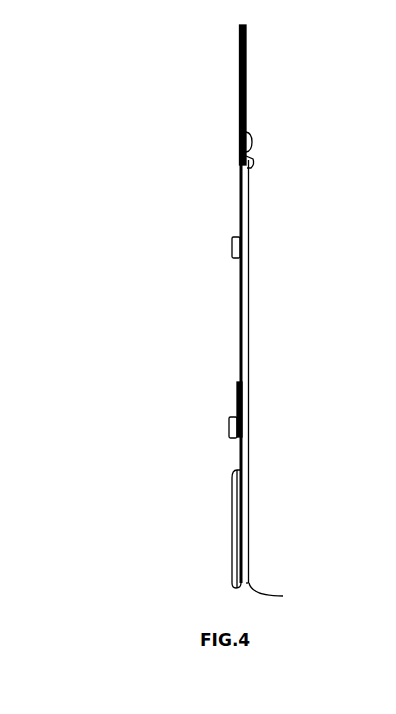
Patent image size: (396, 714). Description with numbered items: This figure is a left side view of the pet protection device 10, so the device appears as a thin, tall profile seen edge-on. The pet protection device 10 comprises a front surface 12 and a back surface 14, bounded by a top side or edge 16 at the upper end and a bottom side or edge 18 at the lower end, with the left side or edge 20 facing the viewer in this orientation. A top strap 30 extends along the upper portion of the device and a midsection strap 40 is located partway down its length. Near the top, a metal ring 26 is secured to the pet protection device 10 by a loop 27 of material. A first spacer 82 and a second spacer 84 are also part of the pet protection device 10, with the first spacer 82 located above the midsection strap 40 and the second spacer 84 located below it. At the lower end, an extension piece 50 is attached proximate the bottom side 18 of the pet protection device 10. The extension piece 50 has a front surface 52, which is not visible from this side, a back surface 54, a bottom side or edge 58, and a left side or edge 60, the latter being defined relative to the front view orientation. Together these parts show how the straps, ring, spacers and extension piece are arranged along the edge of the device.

The pet protection device 10 is at (128, 134).
The front surface 12 is at (254, 318).
The back surface 14 is at (230, 300).
The top side or edge 16 is at (250, 160).
The bottom side or edge 18 is at (279, 595).
The left side or edge 20 is at (248, 358).
The metal ring 26 is at (250, 145).
The loop 27 is at (251, 168).
The top strap 30 is at (237, 62).
The midsection strap 40 is at (228, 395).
The extension piece 50 is at (228, 518).
The front surface 52 is at (233, 470).
The back surface 54 is at (232, 503).
The bottom side or edge 58 is at (232, 592).
The left side or edge 60 is at (236, 540).
The first spacer 82 is at (232, 248).
The second spacer 84 is at (229, 428).